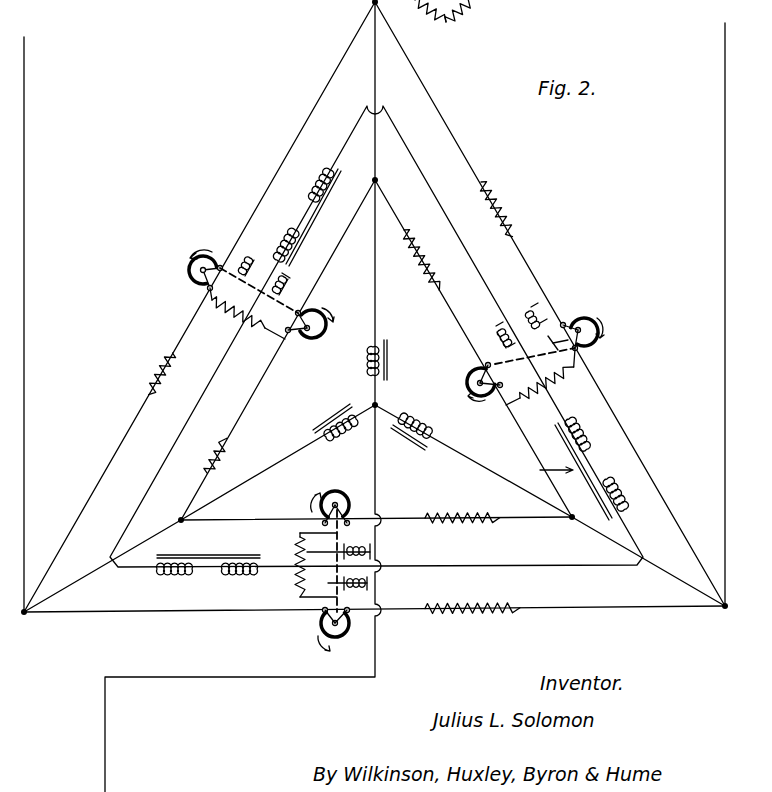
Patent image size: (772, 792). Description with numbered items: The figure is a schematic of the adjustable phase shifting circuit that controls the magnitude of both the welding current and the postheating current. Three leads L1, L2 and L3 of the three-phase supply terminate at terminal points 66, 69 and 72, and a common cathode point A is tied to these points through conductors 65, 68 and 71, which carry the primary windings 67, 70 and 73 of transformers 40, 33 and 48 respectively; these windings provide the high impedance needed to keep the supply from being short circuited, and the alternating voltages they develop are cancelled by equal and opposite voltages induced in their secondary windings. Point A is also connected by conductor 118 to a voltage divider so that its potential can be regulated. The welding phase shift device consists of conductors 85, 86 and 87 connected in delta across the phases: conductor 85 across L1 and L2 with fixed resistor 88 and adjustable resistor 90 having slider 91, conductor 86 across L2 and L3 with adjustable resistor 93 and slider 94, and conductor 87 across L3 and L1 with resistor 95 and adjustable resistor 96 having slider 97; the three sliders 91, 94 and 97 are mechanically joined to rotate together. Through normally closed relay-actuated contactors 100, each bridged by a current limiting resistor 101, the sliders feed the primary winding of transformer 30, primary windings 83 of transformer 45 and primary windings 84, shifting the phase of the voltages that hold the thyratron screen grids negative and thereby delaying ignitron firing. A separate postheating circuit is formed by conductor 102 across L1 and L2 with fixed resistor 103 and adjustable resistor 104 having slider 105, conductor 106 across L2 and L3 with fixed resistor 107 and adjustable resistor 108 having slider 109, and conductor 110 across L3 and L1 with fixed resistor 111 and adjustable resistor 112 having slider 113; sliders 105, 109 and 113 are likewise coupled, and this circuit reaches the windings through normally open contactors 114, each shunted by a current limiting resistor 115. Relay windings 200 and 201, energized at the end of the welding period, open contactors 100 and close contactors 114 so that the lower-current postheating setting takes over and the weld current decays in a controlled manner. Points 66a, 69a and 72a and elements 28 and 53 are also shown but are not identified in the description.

The lead L1 is at (24, 77).
The lead L2 is at (347, 0).
The lead L3 is at (724, 86).
The conductor 102 is at (96, 490).
The fixed resistor 103 is at (150, 392).
The conductor 106 is at (453, 127).
The fixed resistor 107 is at (520, 237).
The conductor 110 is at (633, 608).
The fixed resistor 111 is at (460, 614).
The terminal point 69 is at (370, 6).
The inner junction 69a is at (377, 178).
The terminal point 66 is at (24, 614).
The terminal point 72 is at (727, 607).
The inner junction 66a is at (180, 519).
The inner junction 72a is at (572, 519).
The conductor 65 is at (278, 462).
The conductor 71 is at (473, 461).
The common cathode point A is at (373, 403).
The fixed resistor 88 is at (278, 350).
The conductor 85 is at (202, 486).
The conductor 86 is at (396, 216).
The resistor 28 is at (423, 259).
The conductor 87 is at (288, 232).
The resistor 95 is at (458, 524).
The transformer 30 is at (330, 222).
The primary windings 83 is at (610, 490).
The capacitor 53 is at (203, 548).
The primary windings 84 is at (232, 574).
The transformer 33 is at (394, 350).
The primary winding 70 is at (370, 345).
The conductor 68 is at (372, 226).
The transformer 40 is at (325, 423).
The primary winding 67 is at (338, 434).
The transformer 48 is at (416, 445).
The primary winding 73 is at (413, 412).
The slider 105 is at (189, 270).
The adjustable resistor 104 is at (196, 287).
The relay winding 201 is at (226, 256).
The relay-actuated contactor 114 is at (210, 300).
The current limiting resistor 101 is at (242, 330).
The relay-actuated contactor 100 is at (280, 300).
The adjustable resistor 90 is at (315, 340).
The slider 91 is at (289, 336).
The relay winding 200 is at (297, 280).
The adjustable resistor 108 is at (580, 310).
The slider 109 is at (598, 342).
The current limiting resistor 115 is at (568, 374).
The adjustable resistor 93 is at (472, 387).
The slider 94 is at (476, 367).
The transformer 45 is at (536, 465).
The adjustable resistor 96 is at (325, 492).
The slider 97 is at (348, 500).
The adjustable resistor 112 is at (353, 636).
The slider 113 is at (338, 645).
The conductor 118 is at (105, 757).